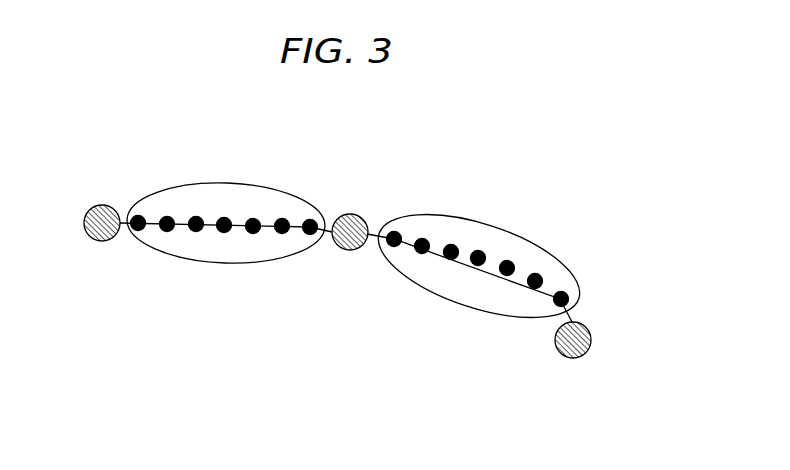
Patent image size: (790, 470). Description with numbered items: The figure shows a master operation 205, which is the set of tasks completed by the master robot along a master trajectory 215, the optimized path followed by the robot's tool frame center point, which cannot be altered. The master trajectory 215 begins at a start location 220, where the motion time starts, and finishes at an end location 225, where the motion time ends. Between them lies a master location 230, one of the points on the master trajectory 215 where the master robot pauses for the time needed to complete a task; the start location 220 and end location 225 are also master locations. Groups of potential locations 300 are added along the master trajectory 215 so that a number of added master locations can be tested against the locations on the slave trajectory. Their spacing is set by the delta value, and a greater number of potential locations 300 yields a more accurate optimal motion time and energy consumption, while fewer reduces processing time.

The master operation 205 is at (524, 124).
The master trajectory 215 is at (463, 258).
The start location 220 is at (99, 205).
The end location 225 is at (590, 346).
The master location 230 is at (348, 214).
The potential locations 300 is at (212, 183).